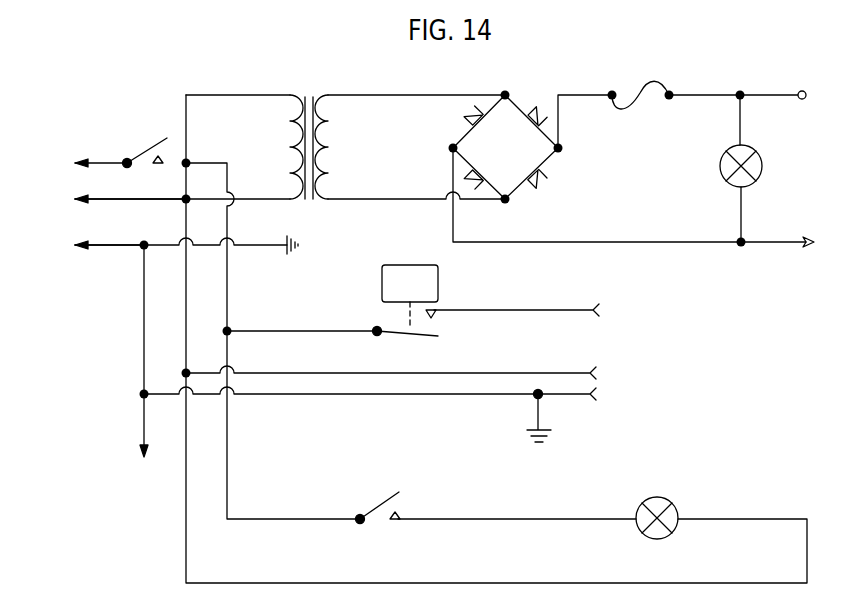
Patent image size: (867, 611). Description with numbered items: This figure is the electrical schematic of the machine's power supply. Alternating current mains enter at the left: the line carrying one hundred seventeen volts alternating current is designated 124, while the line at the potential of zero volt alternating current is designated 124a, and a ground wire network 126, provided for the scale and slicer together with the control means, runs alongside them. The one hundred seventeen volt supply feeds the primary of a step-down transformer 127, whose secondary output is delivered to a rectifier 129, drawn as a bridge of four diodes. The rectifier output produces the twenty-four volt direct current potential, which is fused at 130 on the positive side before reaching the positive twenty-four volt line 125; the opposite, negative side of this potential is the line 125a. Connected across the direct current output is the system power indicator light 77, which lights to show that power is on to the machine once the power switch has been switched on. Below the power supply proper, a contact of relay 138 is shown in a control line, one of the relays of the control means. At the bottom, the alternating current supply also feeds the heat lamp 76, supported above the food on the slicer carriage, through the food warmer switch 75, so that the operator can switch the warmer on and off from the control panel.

The 117 volt alternating current line 124 is at (72, 160).
The zero volt alternating current line 124a is at (74, 201).
The ground wire network 126 is at (108, 247).
The step-down transformer 127 is at (289, 94).
The rectifier 129 is at (512, 96).
The fuse 130 is at (643, 89).
The positive 24 volt D.C. line 125 is at (802, 90).
The negative 24 volt D.C. line 125a is at (810, 240).
The system power indicator light 77 is at (727, 190).
The relay 138 is at (382, 283).
The food warmer switch 75 is at (378, 509).
The heat lamp 76 is at (645, 534).